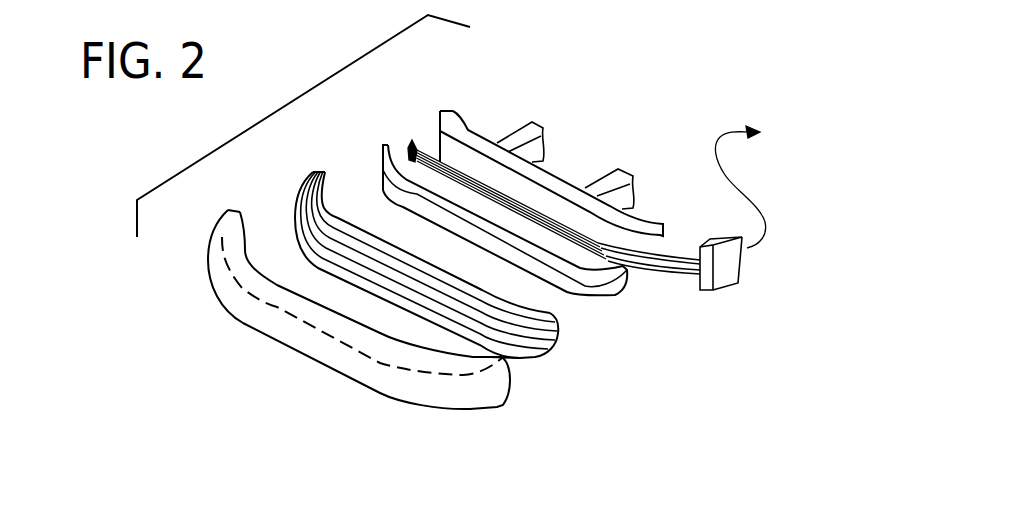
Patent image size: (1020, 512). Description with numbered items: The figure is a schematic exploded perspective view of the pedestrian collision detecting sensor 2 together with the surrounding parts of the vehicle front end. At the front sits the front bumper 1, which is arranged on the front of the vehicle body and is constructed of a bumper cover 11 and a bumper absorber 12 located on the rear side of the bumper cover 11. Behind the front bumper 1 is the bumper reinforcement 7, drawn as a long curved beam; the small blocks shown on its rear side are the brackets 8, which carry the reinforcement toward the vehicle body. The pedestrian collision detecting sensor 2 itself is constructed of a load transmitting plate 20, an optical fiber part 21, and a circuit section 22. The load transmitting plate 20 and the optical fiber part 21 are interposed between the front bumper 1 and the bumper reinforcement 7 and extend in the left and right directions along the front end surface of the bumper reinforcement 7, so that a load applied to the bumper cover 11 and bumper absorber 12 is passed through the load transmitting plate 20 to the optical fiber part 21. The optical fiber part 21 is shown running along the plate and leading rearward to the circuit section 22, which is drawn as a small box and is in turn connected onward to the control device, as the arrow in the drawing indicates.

The front bumper 1 is at (145, 322).
The bumper cover 11 is at (315, 342).
The bumper absorber 12 is at (353, 262).
The bumper reinforcement 7 is at (447, 147).
The bracket 8 is at (532, 130).
The pedestrian collision detecting sensor 2 is at (612, 370).
The load transmitting plate 20 is at (613, 280).
The optical fiber part 21 is at (425, 188).
The circuit section 22 is at (730, 268).